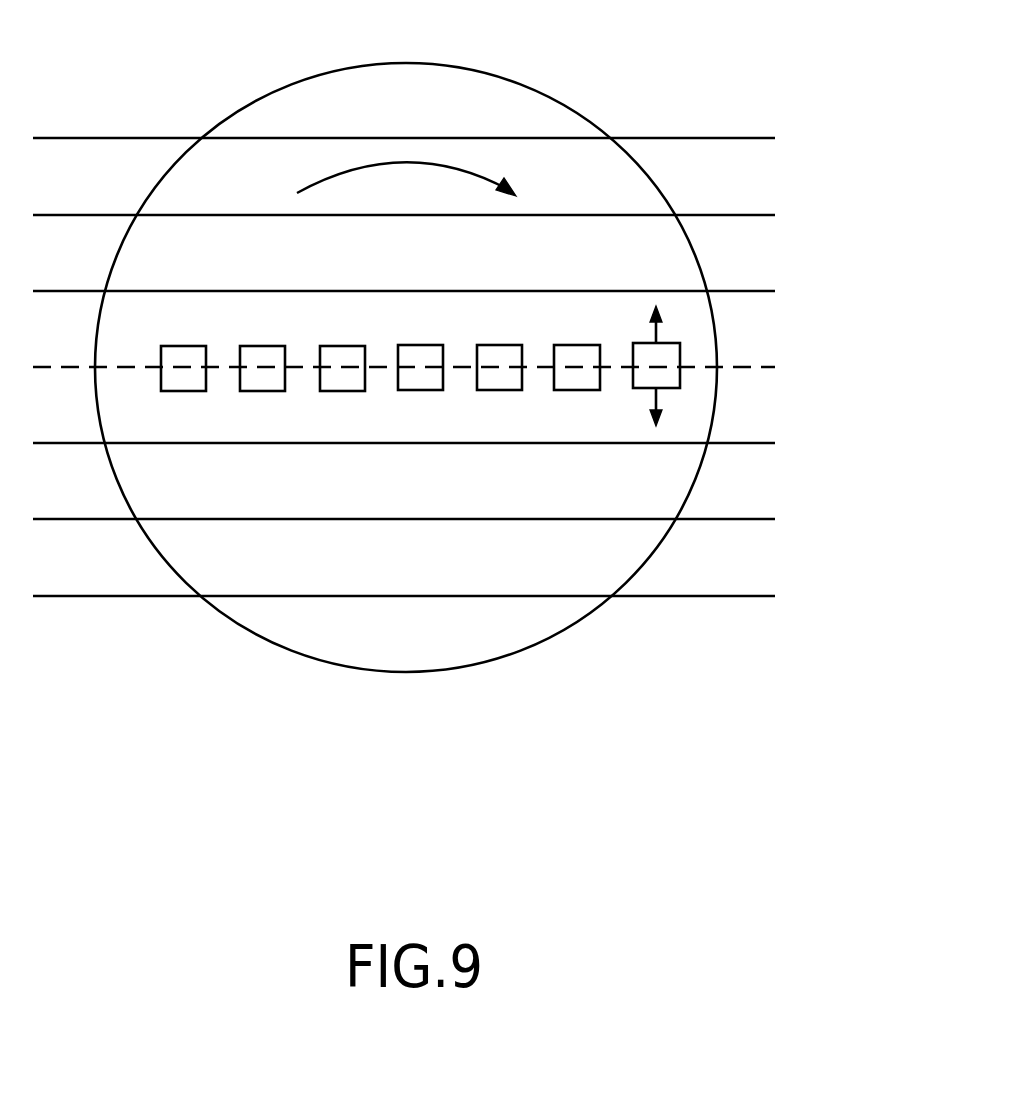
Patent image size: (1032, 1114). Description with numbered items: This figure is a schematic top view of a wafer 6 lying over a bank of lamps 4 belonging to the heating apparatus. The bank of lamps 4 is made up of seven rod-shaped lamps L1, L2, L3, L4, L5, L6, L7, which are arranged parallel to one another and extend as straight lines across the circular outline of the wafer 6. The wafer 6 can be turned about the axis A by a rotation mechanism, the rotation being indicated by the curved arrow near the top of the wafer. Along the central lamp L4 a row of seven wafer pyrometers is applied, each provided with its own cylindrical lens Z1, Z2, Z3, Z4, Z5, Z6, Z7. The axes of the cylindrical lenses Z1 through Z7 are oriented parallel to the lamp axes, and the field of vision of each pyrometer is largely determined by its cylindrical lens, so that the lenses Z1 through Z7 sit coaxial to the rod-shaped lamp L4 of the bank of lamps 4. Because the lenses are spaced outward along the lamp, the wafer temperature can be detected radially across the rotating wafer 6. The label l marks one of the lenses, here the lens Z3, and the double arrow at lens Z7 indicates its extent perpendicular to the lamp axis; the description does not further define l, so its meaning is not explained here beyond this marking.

The bank of lamps 4 is at (472, 466).
The wafer 6 is at (565, 103).
The rod-shaped lamp L1 is at (426, 140).
The rod-shaped lamp L2 is at (426, 217).
The rod-shaped lamp L3 is at (426, 293).
The rod-shaped lamp L4 is at (426, 369).
The rod-shaped lamp L5 is at (426, 445).
The rod-shaped lamp L6 is at (426, 521).
The rod-shaped lamp L7 is at (426, 598).
The cylindrical lens Z1 is at (184, 393).
The cylindrical lens Z2 is at (263, 393).
The cylindrical lens Z3 is at (343, 393).
The cylindrical lens Z4 is at (420, 392).
The cylindrical lens Z5 is at (499, 392).
The cylindrical lens Z6 is at (577, 392).
The cylindrical lens Z7 is at (672, 373).
The zone length l is at (340, 347).
The axis A is at (445, 364).